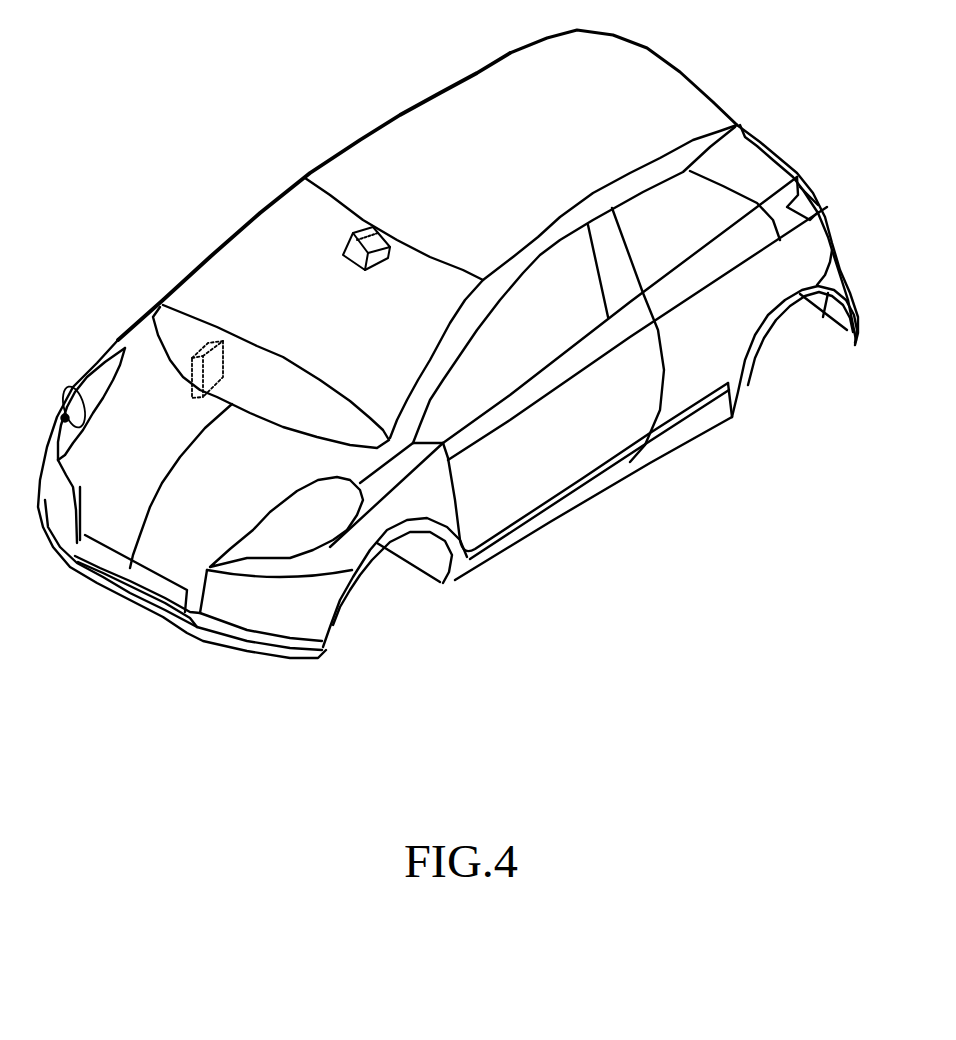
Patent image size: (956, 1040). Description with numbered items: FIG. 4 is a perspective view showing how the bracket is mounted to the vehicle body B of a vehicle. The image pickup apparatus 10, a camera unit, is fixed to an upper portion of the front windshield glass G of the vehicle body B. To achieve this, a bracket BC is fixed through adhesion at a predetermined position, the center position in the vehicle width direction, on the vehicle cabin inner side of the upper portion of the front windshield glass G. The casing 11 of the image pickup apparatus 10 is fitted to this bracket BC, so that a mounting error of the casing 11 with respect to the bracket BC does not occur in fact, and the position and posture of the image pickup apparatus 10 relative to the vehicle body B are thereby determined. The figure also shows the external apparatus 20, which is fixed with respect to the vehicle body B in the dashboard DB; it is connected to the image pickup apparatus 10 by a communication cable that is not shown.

The vehicle body B is at (378, 128).
The front windshield glass G is at (317, 203).
The bracket BC is at (305, 230).
The image pickup apparatus 10 is at (278, 222).
The casing 11 is at (371, 240).
The dashboard DB is at (168, 323).
The external apparatus 20 is at (208, 350).